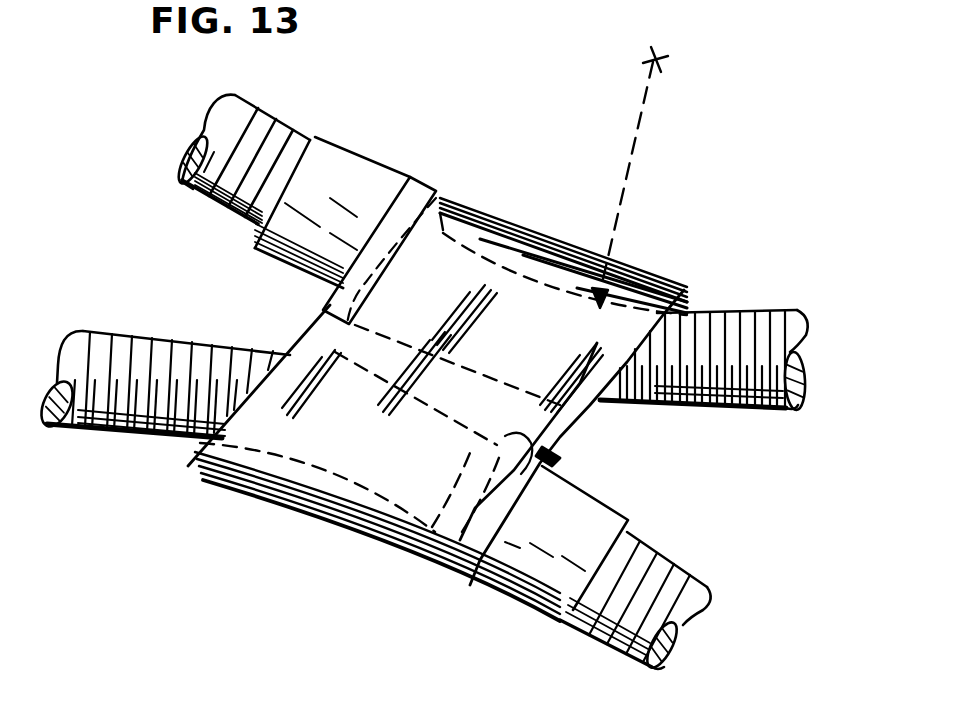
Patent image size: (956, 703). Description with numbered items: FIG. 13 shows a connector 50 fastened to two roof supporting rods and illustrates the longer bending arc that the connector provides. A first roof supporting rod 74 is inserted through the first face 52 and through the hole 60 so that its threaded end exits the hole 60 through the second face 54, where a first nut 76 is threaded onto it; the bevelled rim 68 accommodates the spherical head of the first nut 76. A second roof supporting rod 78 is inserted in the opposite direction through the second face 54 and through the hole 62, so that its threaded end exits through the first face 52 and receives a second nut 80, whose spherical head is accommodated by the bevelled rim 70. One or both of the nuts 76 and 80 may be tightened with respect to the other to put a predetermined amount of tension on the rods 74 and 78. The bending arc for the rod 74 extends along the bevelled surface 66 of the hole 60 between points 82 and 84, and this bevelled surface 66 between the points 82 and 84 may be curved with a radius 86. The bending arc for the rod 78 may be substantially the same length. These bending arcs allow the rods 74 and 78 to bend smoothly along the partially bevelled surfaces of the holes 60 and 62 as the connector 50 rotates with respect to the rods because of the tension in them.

The connector 50 is at (269, 504).
The first face 52 is at (560, 440).
The second face 54 is at (197, 452).
The hole 60 is at (527, 341).
The hole 62 is at (414, 471).
The bevelled surface 66 is at (633, 313).
The bevelled rim 68 is at (441, 198).
The bevelled rim 70 is at (412, 548).
The first roof supporting rod 74 is at (762, 412).
The first nut 76 is at (347, 157).
The second roof supporting rod 78 is at (103, 438).
The second nut 80 is at (503, 587).
The point 82 is at (667, 312).
The point 84 is at (530, 287).
The radius 86 is at (645, 101).